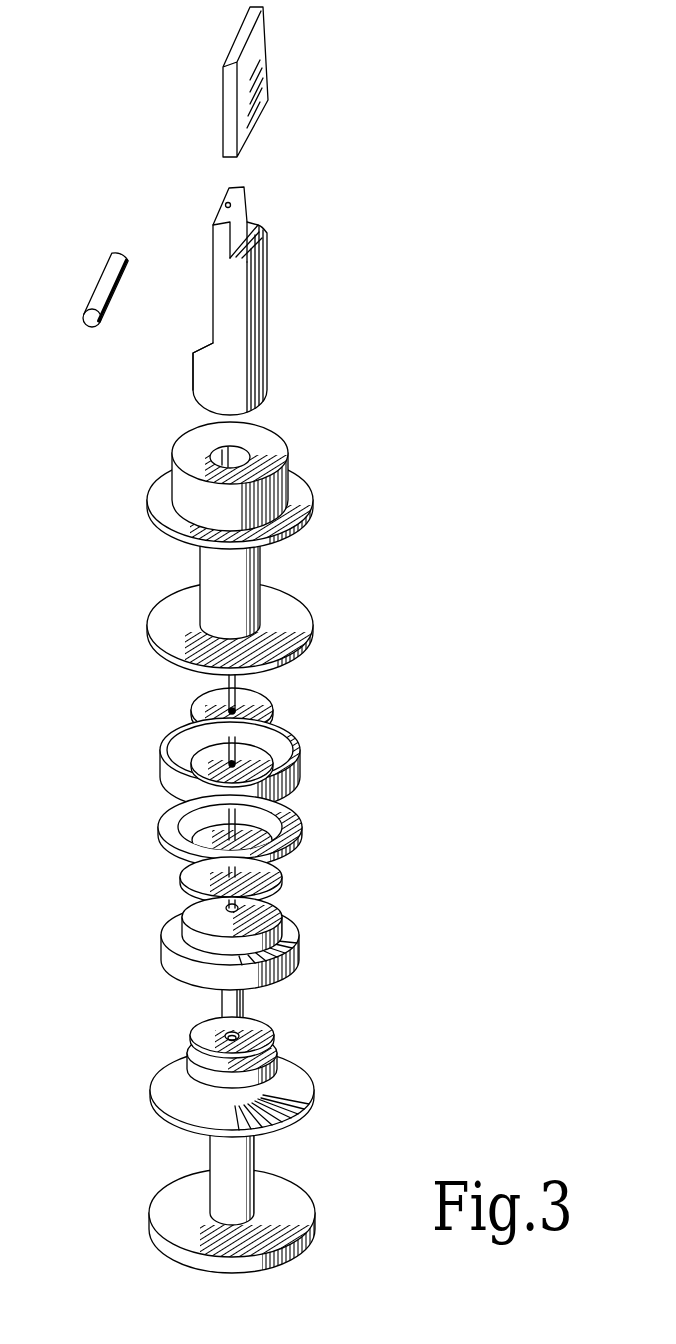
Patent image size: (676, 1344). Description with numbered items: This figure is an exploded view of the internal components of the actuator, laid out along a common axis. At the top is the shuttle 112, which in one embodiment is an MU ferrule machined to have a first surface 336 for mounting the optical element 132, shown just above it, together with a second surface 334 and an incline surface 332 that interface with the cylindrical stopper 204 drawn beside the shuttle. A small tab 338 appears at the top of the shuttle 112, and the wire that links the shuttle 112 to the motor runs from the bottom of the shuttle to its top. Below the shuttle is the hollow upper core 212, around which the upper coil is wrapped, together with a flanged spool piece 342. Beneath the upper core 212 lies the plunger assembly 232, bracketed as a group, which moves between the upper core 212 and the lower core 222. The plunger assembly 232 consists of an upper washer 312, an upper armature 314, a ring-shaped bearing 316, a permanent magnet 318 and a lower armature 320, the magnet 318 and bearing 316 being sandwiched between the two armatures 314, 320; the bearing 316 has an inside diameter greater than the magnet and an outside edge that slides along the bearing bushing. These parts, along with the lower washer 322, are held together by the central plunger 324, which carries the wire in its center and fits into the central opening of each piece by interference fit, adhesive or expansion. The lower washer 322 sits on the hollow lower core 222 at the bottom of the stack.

The shuttle 112 is at (258, 294).
The optical element 132 is at (265, 43).
The cylindrical stopper 204 is at (92, 293).
The upper core 212 is at (148, 635).
The lower core 222 is at (150, 1097).
The plunger assembly 232 is at (231, 832).
The upper washer 312 is at (272, 698).
The upper armature 314 is at (292, 757).
The bearing 316 is at (303, 823).
The permanent magnet 318 is at (283, 863).
The lower armature 320 is at (303, 937).
The lower washer 322 is at (263, 1032).
The central plunger 324 is at (220, 992).
The incline surface 332 is at (200, 343).
The second surface 334 is at (212, 263).
The first surface 336 is at (243, 217).
The tab 338 is at (223, 207).
The spool flange 342 is at (270, 433).